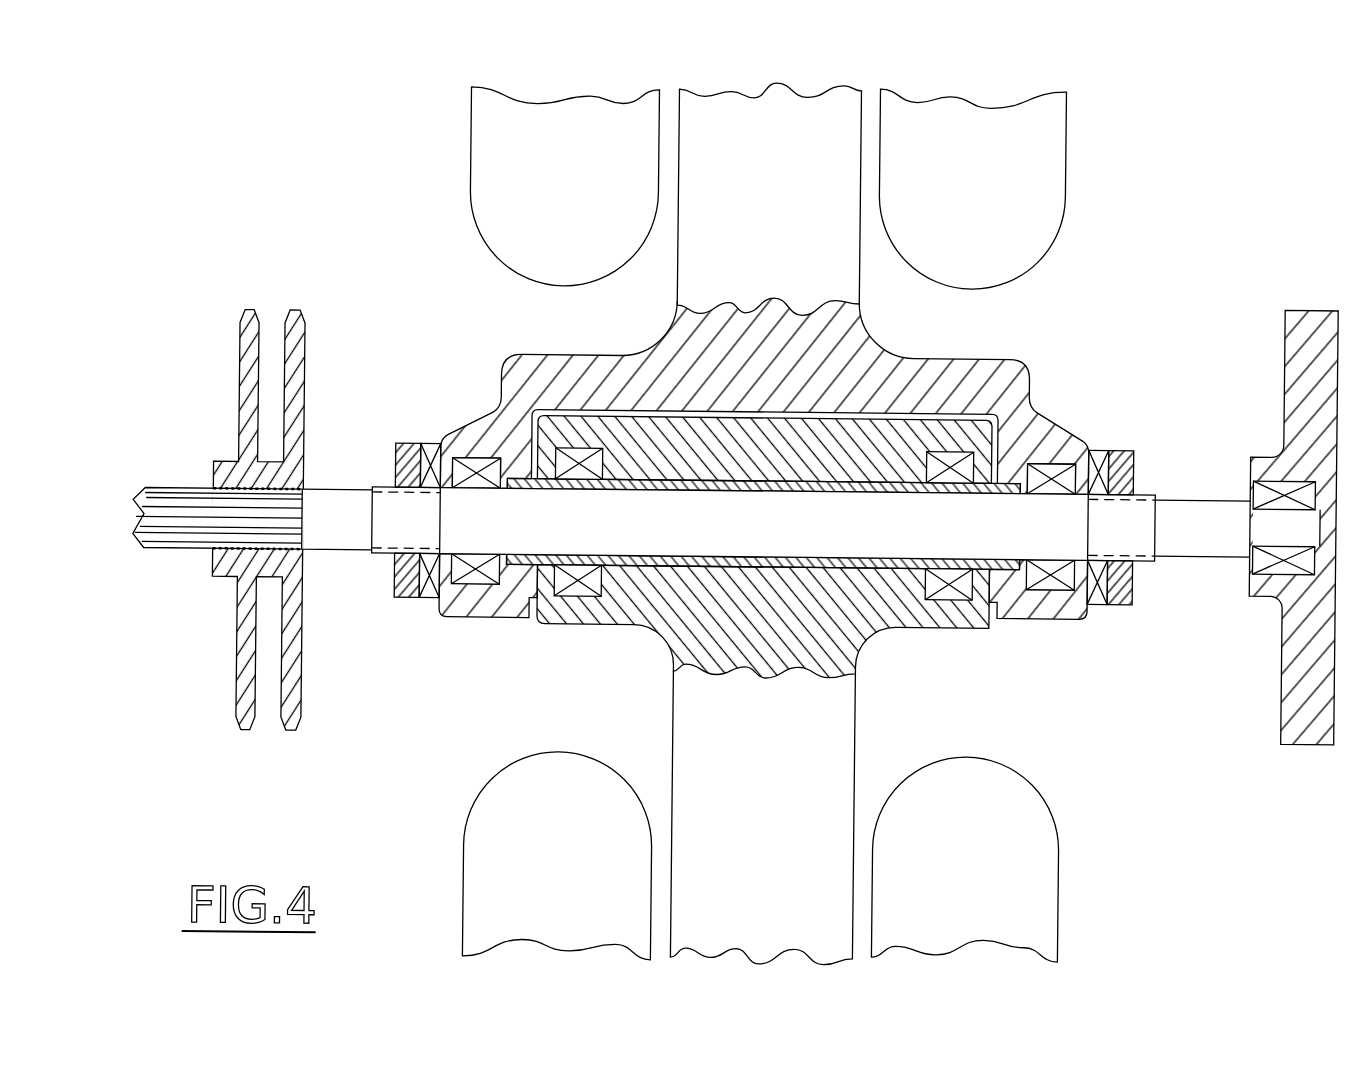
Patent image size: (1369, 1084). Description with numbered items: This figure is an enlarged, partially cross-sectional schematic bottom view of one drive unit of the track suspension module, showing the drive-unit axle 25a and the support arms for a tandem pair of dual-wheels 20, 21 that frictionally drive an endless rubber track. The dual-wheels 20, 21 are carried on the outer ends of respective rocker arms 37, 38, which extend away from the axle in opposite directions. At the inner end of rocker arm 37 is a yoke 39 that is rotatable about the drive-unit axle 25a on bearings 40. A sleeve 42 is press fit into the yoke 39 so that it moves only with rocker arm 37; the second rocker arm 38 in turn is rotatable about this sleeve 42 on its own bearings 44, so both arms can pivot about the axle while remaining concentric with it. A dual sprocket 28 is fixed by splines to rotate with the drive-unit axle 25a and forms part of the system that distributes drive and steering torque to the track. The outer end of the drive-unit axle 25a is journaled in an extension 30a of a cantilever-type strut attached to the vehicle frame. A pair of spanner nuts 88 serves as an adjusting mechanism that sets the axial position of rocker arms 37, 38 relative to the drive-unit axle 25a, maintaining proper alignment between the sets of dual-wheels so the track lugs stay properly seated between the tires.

The dual-wheel 20 is at (576, 208).
The dual-wheel 21 is at (572, 864).
The rocker arm 37 is at (776, 202).
The rocker arm 38 is at (780, 857).
The yoke 39 is at (1000, 372).
The bearings 40 is at (474, 466).
The sleeve 42 is at (763, 541).
The bearings 44 is at (580, 596).
The spanner nuts 88 is at (402, 572).
The dual sprocket 28 is at (288, 322).
The extension 30a is at (1294, 360).
The drive-unit axle 25a is at (1211, 540).